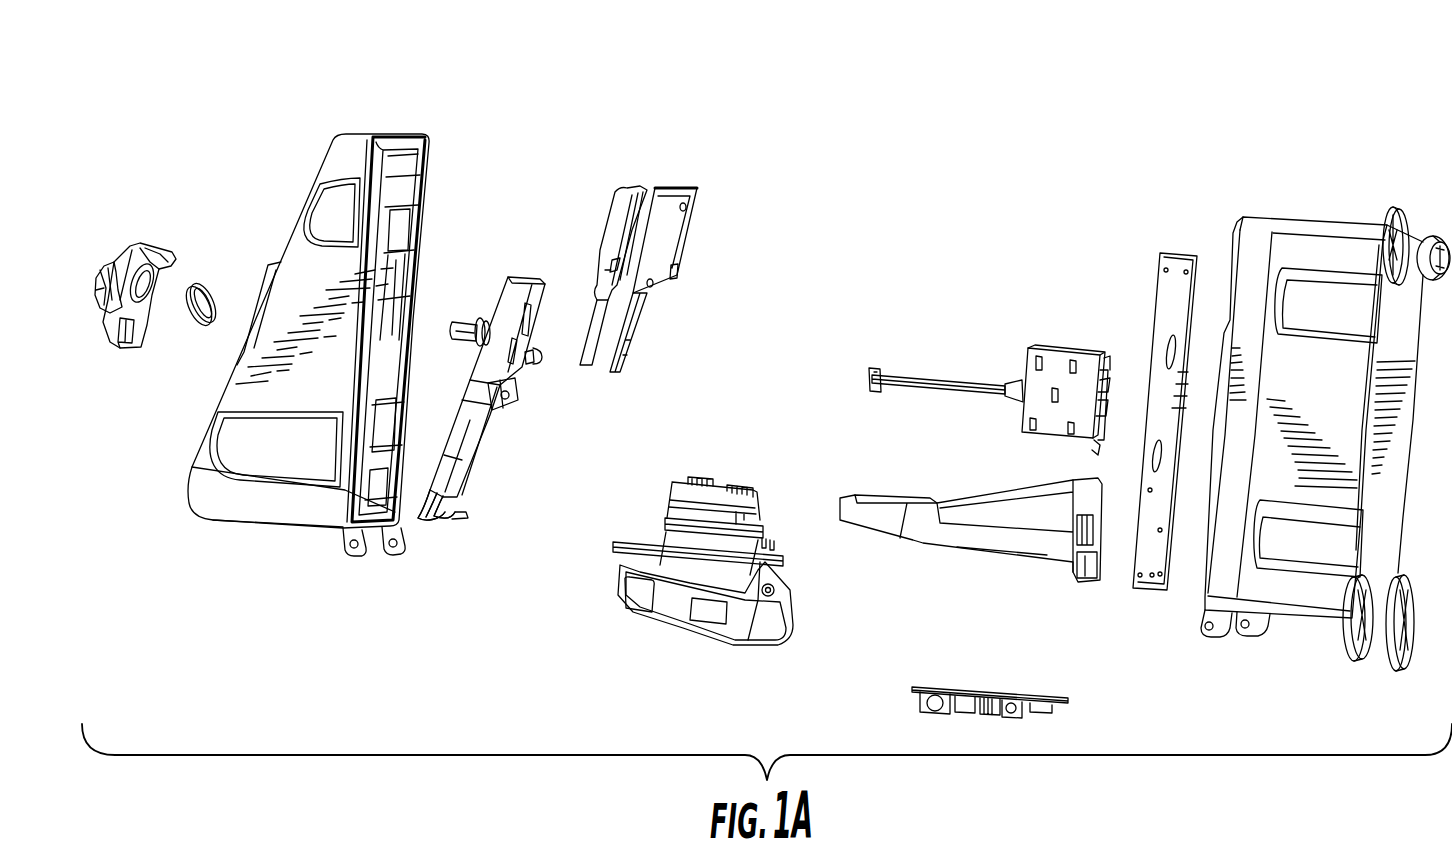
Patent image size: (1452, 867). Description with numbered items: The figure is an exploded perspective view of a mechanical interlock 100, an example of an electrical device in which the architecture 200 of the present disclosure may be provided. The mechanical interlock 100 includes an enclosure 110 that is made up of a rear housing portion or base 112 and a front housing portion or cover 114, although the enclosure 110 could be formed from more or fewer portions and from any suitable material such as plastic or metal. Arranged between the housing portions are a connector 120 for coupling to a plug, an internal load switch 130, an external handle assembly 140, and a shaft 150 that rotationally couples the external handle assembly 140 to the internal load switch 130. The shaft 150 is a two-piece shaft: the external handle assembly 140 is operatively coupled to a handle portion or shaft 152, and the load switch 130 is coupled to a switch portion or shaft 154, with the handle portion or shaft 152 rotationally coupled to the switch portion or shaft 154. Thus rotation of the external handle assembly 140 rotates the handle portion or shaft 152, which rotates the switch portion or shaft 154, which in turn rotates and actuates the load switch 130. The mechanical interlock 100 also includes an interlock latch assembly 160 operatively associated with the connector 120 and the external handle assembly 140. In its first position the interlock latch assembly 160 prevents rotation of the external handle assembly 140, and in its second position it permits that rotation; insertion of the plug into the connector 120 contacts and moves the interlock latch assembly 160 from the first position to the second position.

The mechanical interlock 100 is at (500, 70).
The enclosure 110 is at (308, 345).
The rear housing portion or base 112 is at (1323, 225).
The front housing portion or cover 114 is at (365, 135).
The connector 120 is at (710, 445).
The internal load switch 130 is at (1058, 343).
The external handle assembly 140 is at (160, 225).
The shaft 150 is at (481, 398).
The handle portion or shaft 152 is at (462, 312).
The switch portion or shaft 154 is at (920, 368).
The interlock latch assembly 160 is at (473, 522).
The architecture 200 is at (660, 175).